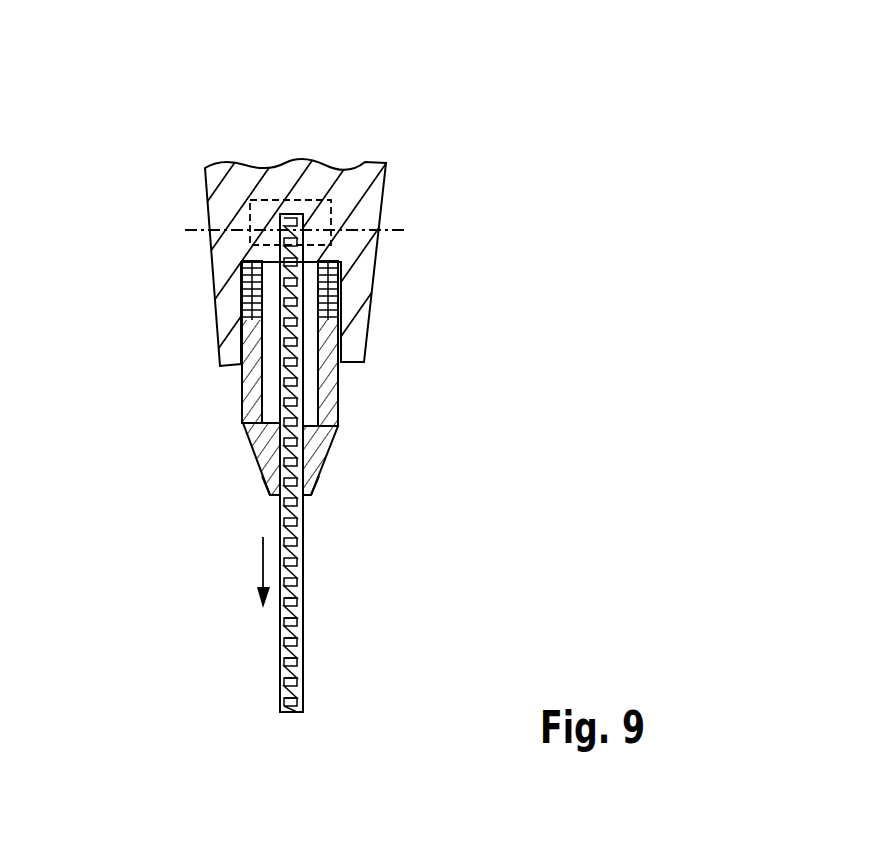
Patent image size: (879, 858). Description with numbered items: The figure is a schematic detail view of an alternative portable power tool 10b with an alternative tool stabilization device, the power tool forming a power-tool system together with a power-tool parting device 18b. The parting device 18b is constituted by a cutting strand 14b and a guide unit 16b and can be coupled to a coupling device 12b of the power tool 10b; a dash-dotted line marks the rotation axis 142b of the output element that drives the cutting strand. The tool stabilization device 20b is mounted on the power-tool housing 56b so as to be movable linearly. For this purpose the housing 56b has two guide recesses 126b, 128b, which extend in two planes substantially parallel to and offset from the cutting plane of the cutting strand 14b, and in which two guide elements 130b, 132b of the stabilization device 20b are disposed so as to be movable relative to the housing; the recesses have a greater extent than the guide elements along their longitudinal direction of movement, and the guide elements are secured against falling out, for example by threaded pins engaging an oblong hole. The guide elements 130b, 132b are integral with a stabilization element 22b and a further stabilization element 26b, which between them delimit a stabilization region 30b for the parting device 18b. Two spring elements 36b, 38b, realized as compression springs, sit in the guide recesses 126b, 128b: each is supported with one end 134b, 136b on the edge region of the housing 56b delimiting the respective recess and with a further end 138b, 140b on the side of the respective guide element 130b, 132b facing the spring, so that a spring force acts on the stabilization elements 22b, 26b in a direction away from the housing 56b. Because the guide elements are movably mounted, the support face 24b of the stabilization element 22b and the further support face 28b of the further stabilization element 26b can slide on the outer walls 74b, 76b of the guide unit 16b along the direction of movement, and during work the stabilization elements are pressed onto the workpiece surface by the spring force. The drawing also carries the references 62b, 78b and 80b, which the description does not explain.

The portable power tool 10b is at (489, 86).
The coupling device 12b is at (294, 223).
The cutting strand 14b is at (303, 623).
The guide unit 16b is at (280, 655).
The power-tool parting device 18b is at (304, 463).
The tool stabilization device 20b is at (152, 398).
The stabilization element 22b is at (318, 480).
The support face 24b is at (251, 430).
The further stabilization element 26b is at (264, 484).
The further support face 28b is at (320, 441).
The stabilization region 30b is at (250, 466).
The spring element 36b is at (341, 307).
The spring element 38b is at (240, 312).
The power-tool housing 56b is at (369, 190).
The direction of movement 62b is at (277, 562).
The outer wall 74b is at (303, 693).
The outer wall 76b is at (282, 688).
The thread portion 78b is at (310, 655).
The thread portion 80b is at (280, 622).
The guide recess 126b is at (345, 260).
The guide recess 128b is at (243, 262).
The guide element 130b is at (342, 353).
The guide element 132b is at (241, 360).
The end of spring element 134b is at (320, 261).
The end of spring element 136b is at (235, 262).
The further end of spring element 138b is at (346, 325).
The further end of spring element 140b is at (235, 325).
The rotation axis 142b is at (393, 229).